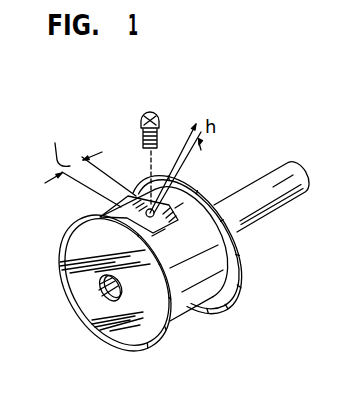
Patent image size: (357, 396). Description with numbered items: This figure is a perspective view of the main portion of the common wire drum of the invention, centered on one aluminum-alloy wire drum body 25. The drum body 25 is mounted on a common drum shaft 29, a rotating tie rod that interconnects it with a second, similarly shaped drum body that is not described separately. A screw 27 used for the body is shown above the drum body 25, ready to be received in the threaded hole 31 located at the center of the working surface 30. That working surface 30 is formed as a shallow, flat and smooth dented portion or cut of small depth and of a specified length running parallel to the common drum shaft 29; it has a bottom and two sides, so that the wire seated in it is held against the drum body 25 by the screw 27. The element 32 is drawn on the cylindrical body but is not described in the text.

The wire drum body 25 is at (137, 335).
The screw 27 is at (160, 115).
The common drum shaft 29 is at (274, 197).
The working surface 30 is at (100, 246).
The threaded hole 31 is at (100, 216).
The cylindrical body portion 32 is at (192, 297).